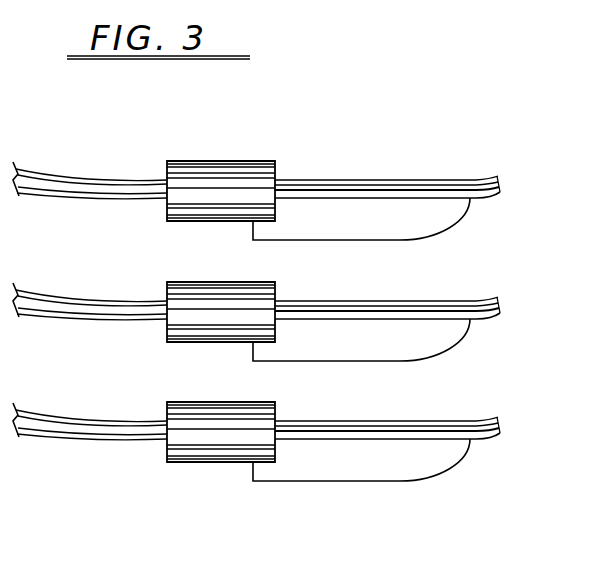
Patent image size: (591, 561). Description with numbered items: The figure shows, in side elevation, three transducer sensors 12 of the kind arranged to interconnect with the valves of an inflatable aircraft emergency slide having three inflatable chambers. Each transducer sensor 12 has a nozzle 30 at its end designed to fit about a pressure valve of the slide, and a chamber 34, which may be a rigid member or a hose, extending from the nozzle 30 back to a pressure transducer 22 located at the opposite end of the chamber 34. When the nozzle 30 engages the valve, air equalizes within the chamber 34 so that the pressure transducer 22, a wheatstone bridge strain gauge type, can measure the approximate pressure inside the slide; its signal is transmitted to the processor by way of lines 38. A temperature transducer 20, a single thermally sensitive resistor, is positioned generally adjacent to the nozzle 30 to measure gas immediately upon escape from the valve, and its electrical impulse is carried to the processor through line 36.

The transducer sensors 12 is at (352, 137).
The temperature transducer 20 is at (477, 198).
The pressure transducer 22 is at (220, 161).
The nozzle 30 is at (502, 188).
The chamber 34 is at (357, 181).
The line 36 is at (378, 242).
The lines 38 is at (83, 181).